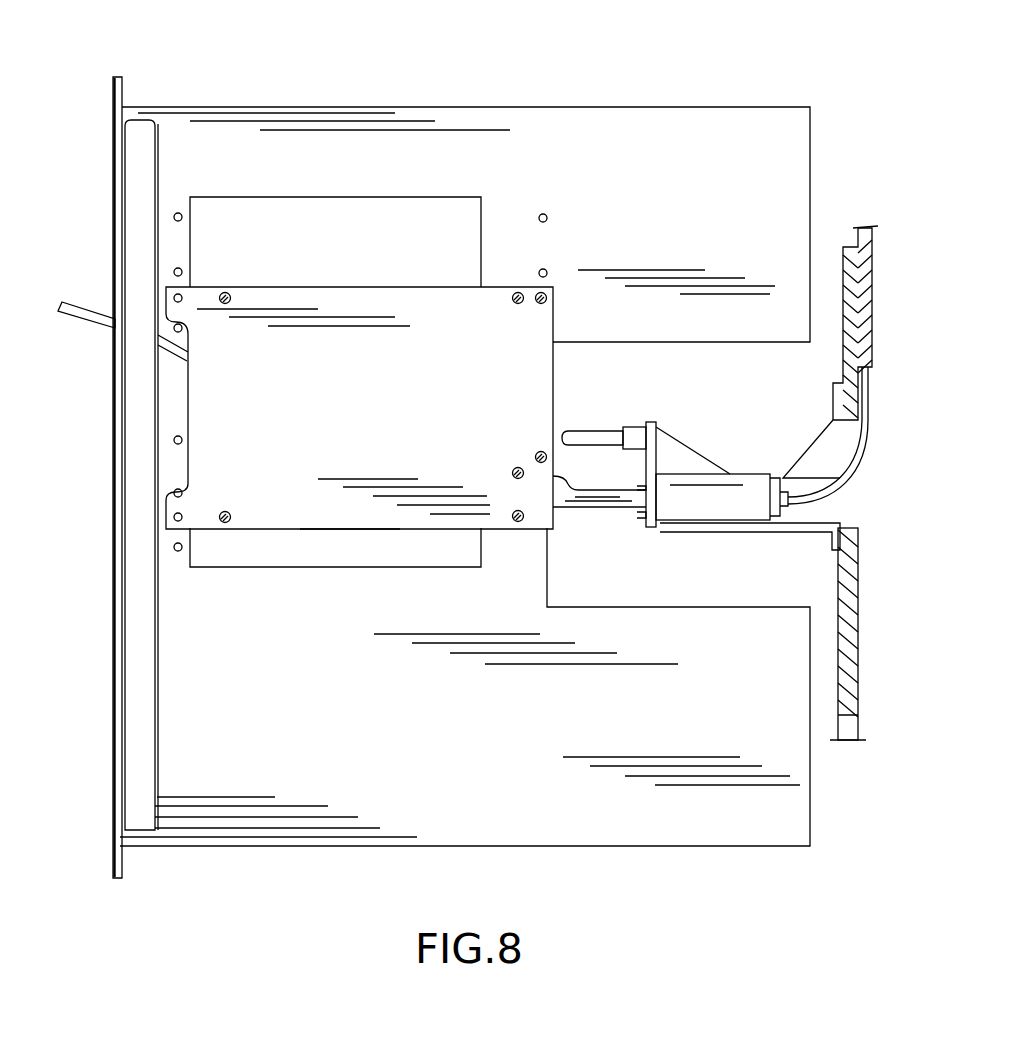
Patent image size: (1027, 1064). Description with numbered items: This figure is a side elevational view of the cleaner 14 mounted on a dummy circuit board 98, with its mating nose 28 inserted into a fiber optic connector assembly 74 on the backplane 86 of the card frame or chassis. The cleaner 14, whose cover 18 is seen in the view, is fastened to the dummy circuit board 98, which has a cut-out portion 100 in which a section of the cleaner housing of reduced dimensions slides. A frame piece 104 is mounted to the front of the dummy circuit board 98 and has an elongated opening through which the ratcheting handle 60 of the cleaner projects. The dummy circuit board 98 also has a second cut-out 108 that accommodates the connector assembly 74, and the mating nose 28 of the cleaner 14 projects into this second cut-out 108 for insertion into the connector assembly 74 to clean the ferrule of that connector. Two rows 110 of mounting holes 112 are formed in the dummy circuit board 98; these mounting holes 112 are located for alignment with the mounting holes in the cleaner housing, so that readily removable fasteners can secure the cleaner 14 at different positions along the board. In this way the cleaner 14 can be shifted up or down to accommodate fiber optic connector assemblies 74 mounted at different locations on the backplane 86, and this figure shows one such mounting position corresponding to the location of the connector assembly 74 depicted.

The cleaner 14 is at (350, 509).
The cover 18 is at (355, 403).
The mating nose 28 is at (603, 497).
The ratcheting handle 60 is at (94, 319).
The fiber optic connector assembly 74 is at (671, 521).
The backplane 86 is at (846, 628).
The dummy circuit board 98 is at (422, 122).
The cut-out portion 100 is at (288, 203).
The frame piece 104 is at (122, 77).
The second cut-out 108 is at (620, 606).
The rows of mounting holes 110 is at (178, 212).
The mounting holes 112 is at (174, 270).